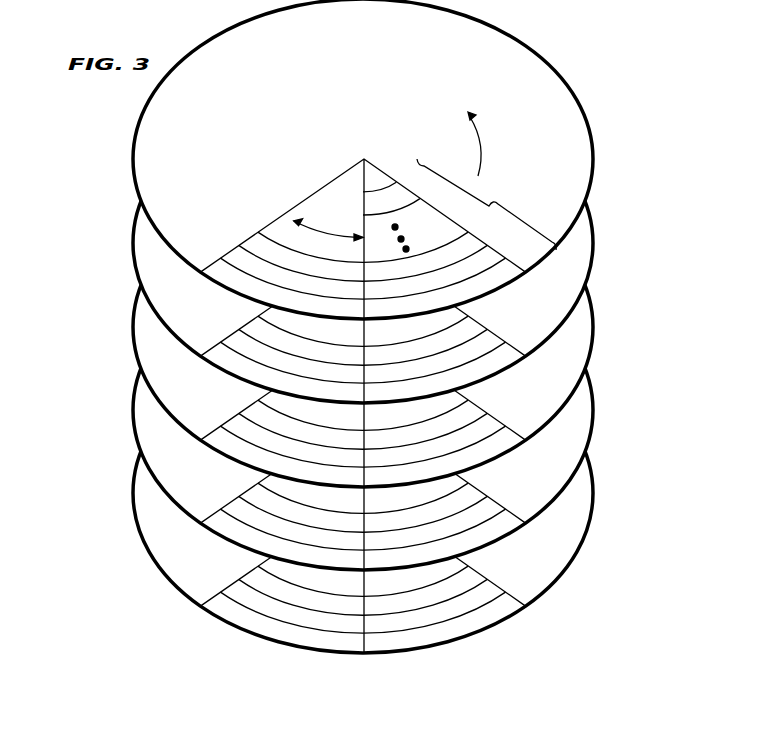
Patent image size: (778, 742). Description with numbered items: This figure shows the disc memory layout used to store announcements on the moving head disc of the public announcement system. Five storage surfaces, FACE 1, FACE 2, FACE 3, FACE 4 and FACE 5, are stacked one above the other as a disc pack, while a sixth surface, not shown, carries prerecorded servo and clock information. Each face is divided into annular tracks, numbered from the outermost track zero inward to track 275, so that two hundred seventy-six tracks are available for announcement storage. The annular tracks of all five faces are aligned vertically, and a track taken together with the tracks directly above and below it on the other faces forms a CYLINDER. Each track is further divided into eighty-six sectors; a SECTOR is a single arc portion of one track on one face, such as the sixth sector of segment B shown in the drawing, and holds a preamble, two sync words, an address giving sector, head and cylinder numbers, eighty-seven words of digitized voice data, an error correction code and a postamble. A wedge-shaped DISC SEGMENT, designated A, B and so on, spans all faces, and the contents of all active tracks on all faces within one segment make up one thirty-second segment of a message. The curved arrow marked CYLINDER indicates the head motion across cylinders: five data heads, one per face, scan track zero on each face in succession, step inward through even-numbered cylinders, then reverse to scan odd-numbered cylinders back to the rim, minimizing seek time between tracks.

The disc face FACE 1 is at (575, 160).
The disc face FACE 2 is at (575, 160).
The disc face FACE 3 is at (575, 160).
The disc face FACE 4 is at (402, 411).
The disc face FACE 5 is at (402, 494).
The sector SECTOR is at (260, 252).
The disc segment DISC SEGMENT is at (340, 192).
The cylinder CYLINDER is at (486, 180).
The innermost announcement track 275 is at (463, 217).